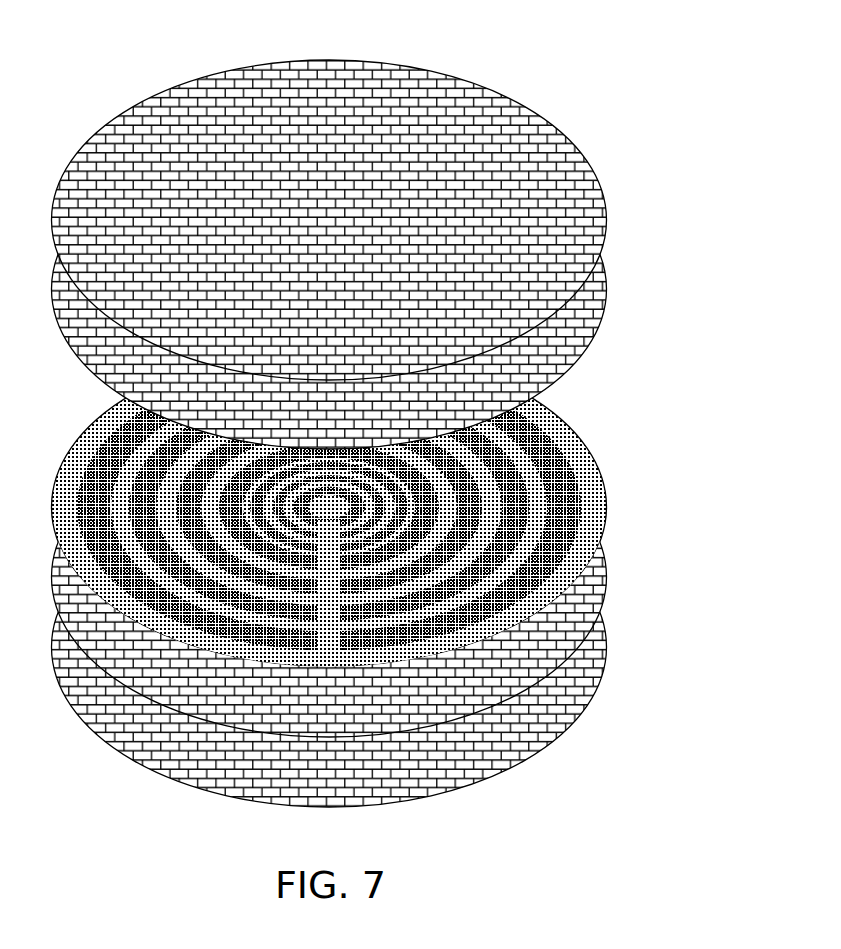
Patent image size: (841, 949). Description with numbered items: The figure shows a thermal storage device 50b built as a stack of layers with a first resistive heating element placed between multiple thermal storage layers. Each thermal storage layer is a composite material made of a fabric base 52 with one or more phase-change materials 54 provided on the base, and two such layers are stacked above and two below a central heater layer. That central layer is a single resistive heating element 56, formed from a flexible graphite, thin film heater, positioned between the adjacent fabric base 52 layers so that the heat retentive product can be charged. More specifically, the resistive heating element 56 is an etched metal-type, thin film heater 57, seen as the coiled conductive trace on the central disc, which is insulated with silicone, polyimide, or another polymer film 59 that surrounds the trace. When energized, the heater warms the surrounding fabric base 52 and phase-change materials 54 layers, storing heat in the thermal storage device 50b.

The thermal storage device 50b is at (377, 415).
The fabric base 52 is at (375, 433).
The phase-change material 54 is at (608, 222).
The resistive heating element 56 is at (365, 508).
The thin film heater 57 is at (575, 437).
The polymer film 59 is at (600, 470).